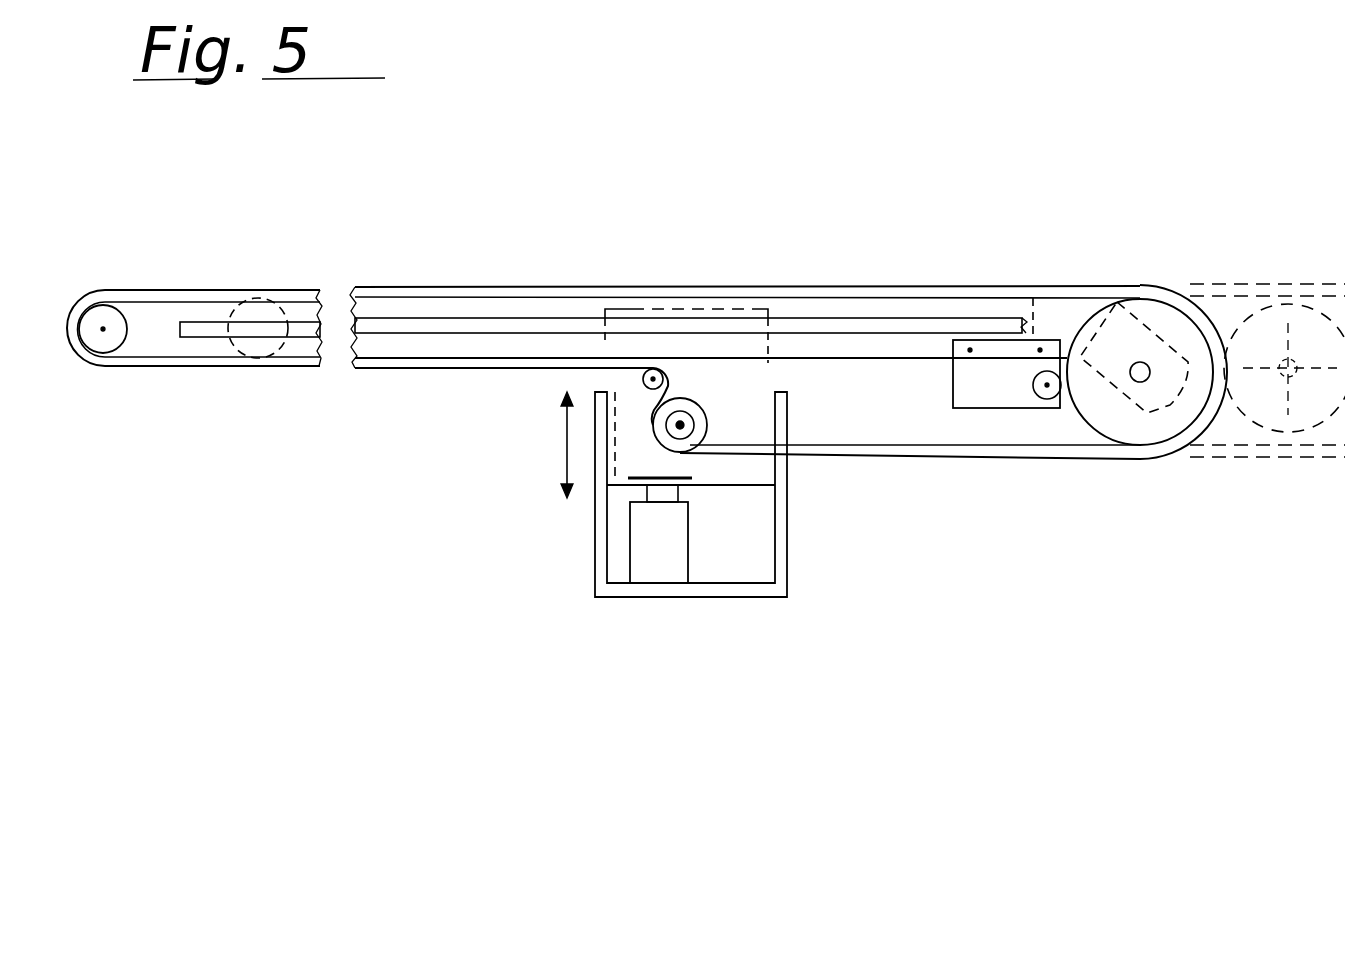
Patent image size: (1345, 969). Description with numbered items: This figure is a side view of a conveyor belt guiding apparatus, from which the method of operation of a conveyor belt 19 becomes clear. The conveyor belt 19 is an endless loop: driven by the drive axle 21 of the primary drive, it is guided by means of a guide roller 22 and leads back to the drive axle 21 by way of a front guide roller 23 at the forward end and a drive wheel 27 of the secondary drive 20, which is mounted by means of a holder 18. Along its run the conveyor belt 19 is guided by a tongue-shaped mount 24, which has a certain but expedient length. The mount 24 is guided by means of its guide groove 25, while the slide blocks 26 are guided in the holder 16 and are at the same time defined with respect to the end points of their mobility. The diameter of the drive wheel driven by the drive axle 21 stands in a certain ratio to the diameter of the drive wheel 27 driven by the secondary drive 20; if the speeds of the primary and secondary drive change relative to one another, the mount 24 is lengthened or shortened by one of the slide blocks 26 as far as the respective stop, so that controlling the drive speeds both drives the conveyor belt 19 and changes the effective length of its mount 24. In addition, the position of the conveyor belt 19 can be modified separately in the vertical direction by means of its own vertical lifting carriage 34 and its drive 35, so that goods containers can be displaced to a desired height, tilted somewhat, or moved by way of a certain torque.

The holder 16 is at (787, 565).
The holder 18 is at (1160, 398).
The conveyor belt 19 is at (1080, 294).
The secondary drive 20 is at (1010, 395).
The drive axle 21 is at (690, 427).
The guide roller 22 is at (650, 382).
The front guide roller 23 is at (118, 338).
The tongue-shaped mount 24 is at (268, 322).
The guide groove 25 is at (508, 333).
The slide blocks 26 is at (617, 330).
The drive wheel 27 is at (1165, 305).
The vertical lifting carriage 34 is at (732, 475).
The drive 35 is at (655, 540).